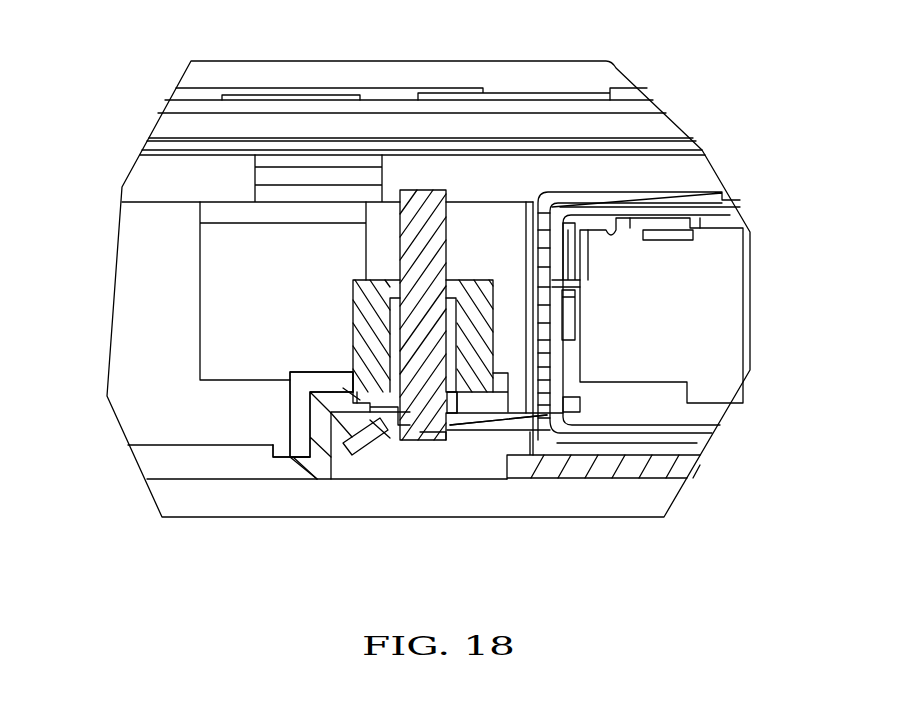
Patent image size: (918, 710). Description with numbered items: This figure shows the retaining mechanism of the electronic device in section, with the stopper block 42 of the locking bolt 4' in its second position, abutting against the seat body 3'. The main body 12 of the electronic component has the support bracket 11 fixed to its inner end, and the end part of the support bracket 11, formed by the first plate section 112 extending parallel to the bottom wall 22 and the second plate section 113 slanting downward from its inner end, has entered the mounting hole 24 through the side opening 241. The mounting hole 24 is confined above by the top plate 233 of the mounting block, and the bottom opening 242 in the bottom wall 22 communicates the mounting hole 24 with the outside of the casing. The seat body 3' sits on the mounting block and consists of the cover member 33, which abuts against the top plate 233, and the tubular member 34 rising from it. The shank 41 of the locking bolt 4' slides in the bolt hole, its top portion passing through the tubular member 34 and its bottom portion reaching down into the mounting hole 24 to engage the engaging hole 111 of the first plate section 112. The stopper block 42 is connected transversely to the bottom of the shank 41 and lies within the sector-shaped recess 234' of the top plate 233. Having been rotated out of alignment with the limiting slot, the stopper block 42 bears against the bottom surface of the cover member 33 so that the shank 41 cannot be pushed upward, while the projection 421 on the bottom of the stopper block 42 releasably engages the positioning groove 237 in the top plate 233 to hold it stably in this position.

The seat body 3' is at (386, 204).
The locking bolt 4' is at (416, 228).
The support bracket 11 is at (668, 180).
The main body 12 is at (712, 312).
The bottom wall 22 is at (657, 466).
The mounting hole 24 is at (440, 454).
The side opening 241 is at (486, 408).
The bottom opening 242 is at (330, 470).
The cover member 33 is at (290, 380).
The tubular member 34 is at (372, 320).
The shank 41 is at (430, 268).
The stopper block 42 is at (372, 402).
The projection 421 is at (356, 395).
The top plate 233 is at (333, 423).
The recess 234' is at (201, 356).
The positioning groove 237 is at (375, 407).
The engaging hole 111 is at (400, 428).
The first plate section 112 is at (500, 418).
The second plate section 113 is at (347, 442).